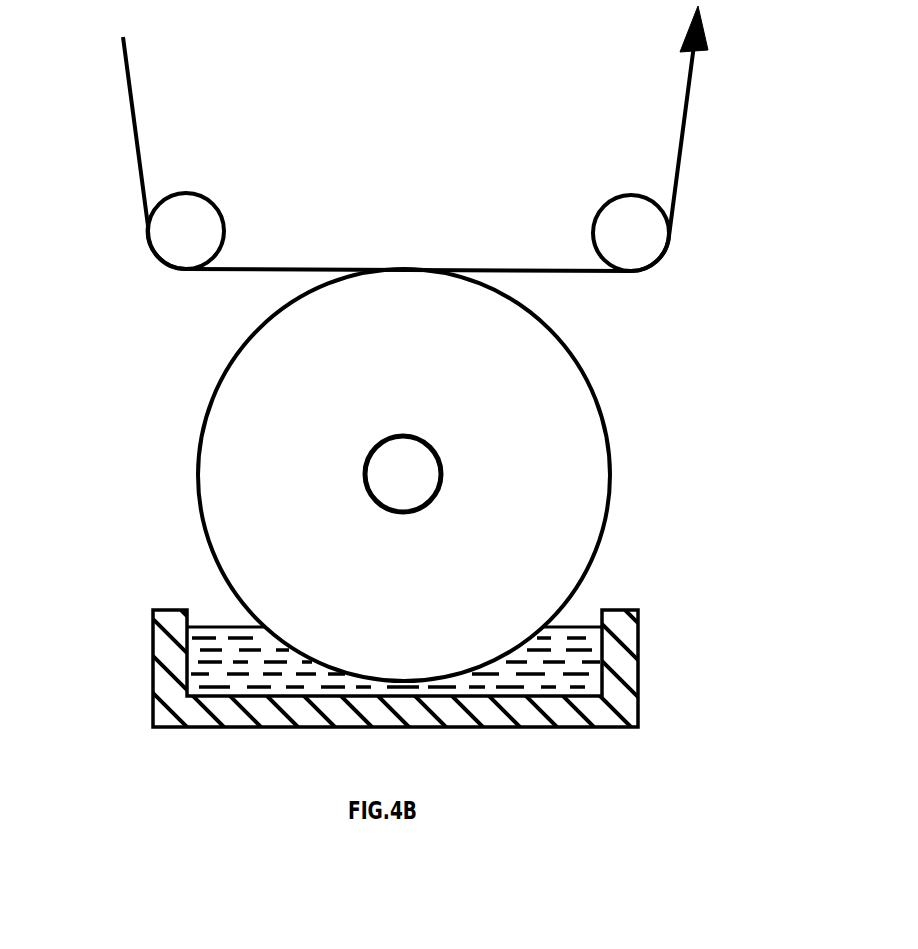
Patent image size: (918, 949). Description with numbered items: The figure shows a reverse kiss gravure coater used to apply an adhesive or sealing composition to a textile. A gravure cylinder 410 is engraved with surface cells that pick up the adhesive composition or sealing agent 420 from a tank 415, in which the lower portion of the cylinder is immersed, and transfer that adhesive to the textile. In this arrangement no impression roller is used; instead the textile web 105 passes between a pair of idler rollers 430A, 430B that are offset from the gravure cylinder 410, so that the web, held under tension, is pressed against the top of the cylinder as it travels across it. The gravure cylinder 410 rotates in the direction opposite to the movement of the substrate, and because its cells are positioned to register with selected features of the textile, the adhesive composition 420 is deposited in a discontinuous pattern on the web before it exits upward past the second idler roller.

The web / substrate 105 is at (685, 142).
The gravure cylinder 410 is at (232, 465).
The tank 415 is at (153, 689).
The adhesive composition or sealing agent 420 is at (222, 622).
The idler roller 430A is at (188, 208).
The idler roller 430B is at (628, 210).